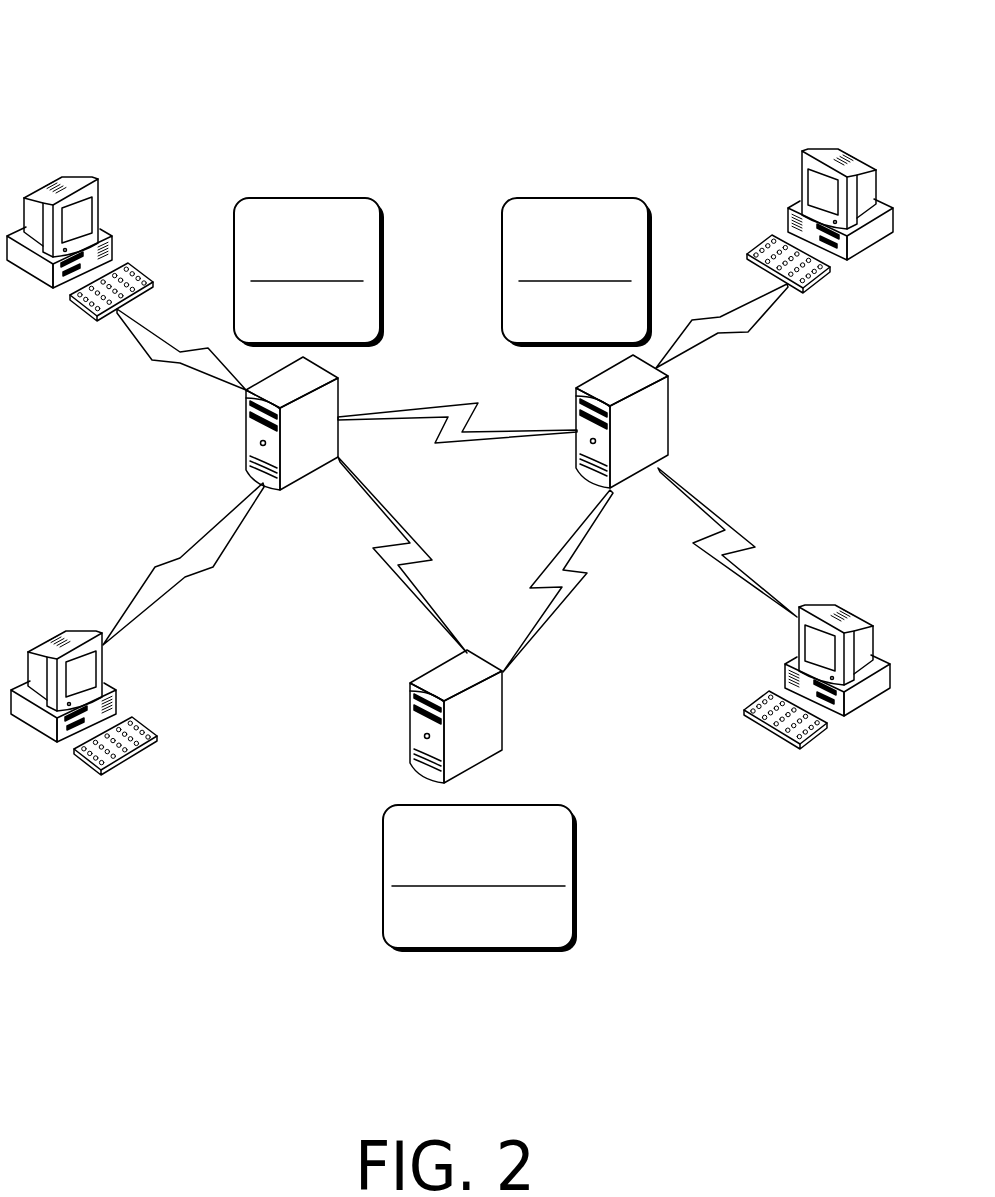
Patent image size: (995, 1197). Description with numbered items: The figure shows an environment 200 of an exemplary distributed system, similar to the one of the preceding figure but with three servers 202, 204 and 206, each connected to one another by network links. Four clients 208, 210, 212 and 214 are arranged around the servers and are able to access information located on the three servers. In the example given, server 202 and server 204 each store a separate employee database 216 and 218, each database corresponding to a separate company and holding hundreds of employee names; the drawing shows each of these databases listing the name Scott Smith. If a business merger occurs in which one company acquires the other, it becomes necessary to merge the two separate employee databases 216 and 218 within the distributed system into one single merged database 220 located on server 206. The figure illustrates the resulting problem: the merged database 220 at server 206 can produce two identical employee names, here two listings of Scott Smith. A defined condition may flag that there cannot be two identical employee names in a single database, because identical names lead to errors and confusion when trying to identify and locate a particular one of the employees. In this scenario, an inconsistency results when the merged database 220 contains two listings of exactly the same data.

The environment 200 is at (126, 40).
The server 202 is at (246, 427).
The server 204 is at (669, 416).
The server 206 is at (503, 712).
The client 208 is at (103, 633).
The client 210 is at (100, 174).
The client 212 is at (800, 152).
The client 214 is at (797, 605).
The employee database 216 is at (288, 229).
The employee database 218 is at (556, 229).
The merged database 220 is at (460, 834).